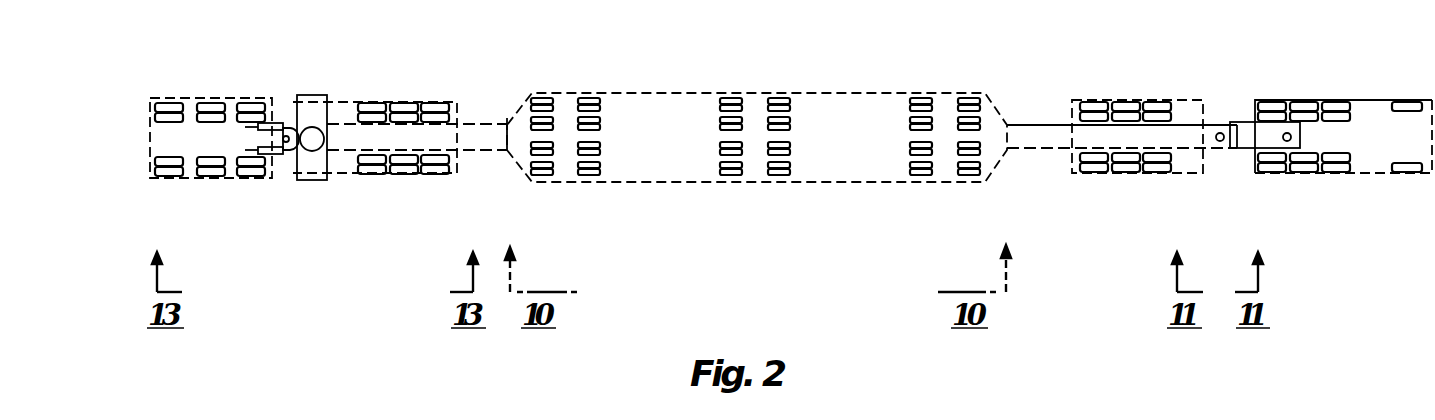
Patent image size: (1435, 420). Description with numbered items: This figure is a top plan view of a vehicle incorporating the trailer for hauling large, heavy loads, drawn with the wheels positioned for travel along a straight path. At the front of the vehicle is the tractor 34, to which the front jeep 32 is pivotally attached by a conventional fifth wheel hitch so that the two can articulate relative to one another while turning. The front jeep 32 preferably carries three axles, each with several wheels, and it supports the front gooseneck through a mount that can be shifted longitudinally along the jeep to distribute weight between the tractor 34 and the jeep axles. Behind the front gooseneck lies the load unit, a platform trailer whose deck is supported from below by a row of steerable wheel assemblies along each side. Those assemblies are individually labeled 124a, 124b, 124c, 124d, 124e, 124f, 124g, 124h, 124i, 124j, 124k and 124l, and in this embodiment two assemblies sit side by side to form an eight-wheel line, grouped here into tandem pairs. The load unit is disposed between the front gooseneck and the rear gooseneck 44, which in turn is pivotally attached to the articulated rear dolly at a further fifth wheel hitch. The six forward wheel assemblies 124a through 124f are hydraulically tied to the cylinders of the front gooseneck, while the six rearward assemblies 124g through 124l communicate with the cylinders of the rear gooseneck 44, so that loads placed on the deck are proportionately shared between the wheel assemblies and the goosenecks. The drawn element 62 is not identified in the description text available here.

The rear gooseneck 44 is at (474, 135).
The wheel assembly 124a is at (965, 115).
The wheel assembly 124b is at (965, 160).
The wheel assembly 124c is at (918, 115).
The wheel assembly 124d is at (918, 160).
The wheel assembly 124e is at (780, 112).
The wheel assembly 124f is at (778, 162).
The wheel assembly 124g is at (730, 112).
The wheel assembly 124h is at (730, 162).
The wheel assembly 124i is at (592, 115).
The wheel assembly 124j is at (592, 160).
The wheel assembly 124k is at (543, 115).
The wheel assembly 124l is at (545, 160).
The dolly module 62 is at (1085, 100).
The front jeep 32 is at (1195, 100).
The tractor 34 is at (1378, 110).